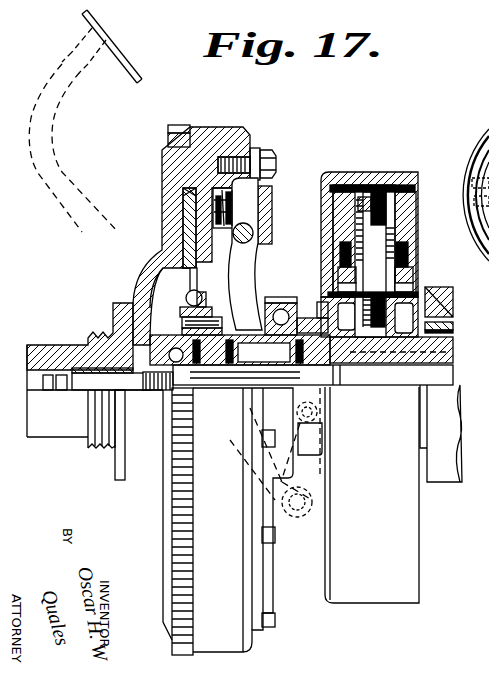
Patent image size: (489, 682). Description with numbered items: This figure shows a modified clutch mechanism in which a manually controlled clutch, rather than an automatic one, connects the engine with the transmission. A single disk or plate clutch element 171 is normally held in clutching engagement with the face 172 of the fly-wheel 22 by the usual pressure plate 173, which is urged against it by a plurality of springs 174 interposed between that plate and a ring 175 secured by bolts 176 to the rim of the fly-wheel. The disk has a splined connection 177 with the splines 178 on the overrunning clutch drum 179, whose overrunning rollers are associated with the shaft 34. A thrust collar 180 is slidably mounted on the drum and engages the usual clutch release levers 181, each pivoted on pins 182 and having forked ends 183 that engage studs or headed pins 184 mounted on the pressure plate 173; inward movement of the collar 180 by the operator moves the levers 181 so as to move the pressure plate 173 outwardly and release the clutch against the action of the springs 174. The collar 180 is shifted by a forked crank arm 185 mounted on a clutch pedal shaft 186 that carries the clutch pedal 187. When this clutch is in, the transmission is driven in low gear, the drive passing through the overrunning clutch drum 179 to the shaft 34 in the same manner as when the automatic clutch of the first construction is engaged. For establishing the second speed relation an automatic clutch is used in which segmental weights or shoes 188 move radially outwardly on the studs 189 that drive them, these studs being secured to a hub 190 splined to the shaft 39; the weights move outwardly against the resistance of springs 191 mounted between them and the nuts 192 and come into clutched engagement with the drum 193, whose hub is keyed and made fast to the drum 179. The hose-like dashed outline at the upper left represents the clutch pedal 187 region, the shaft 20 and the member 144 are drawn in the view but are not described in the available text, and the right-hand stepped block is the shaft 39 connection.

The shaft 20 is at (72, 430).
The fly-wheel 22 is at (126, 302).
The shaft 34 is at (228, 385).
The shaft 39 is at (453, 350).
The support member 144 is at (310, 300).
The clutch element 171 is at (168, 288).
The face 172 is at (183, 207).
The pressure plate 173 is at (200, 272).
The springs 174 is at (263, 187).
The ring 175 is at (270, 208).
The bolts 176 is at (263, 152).
The splined connection 177 is at (180, 308).
The splines 178 is at (206, 303).
The overrunning clutch drum 179 is at (250, 340).
The thrust collar 180 is at (302, 298).
The clutch release levers 181 is at (248, 263).
The pins 182 is at (255, 229).
The forked ends 183 is at (210, 188).
The headed pins 184 is at (266, 184).
The forked crank arm 185 is at (327, 435).
The clutch pedal shaft 186 is at (320, 498).
The clutch pedal 187 is at (60, 156).
The segmental weights 188 is at (408, 228).
The studs 189 is at (378, 278).
The hub 190 is at (373, 383).
The springs 191 is at (402, 215).
The nuts 192 is at (397, 197).
The drum 193 is at (363, 173).